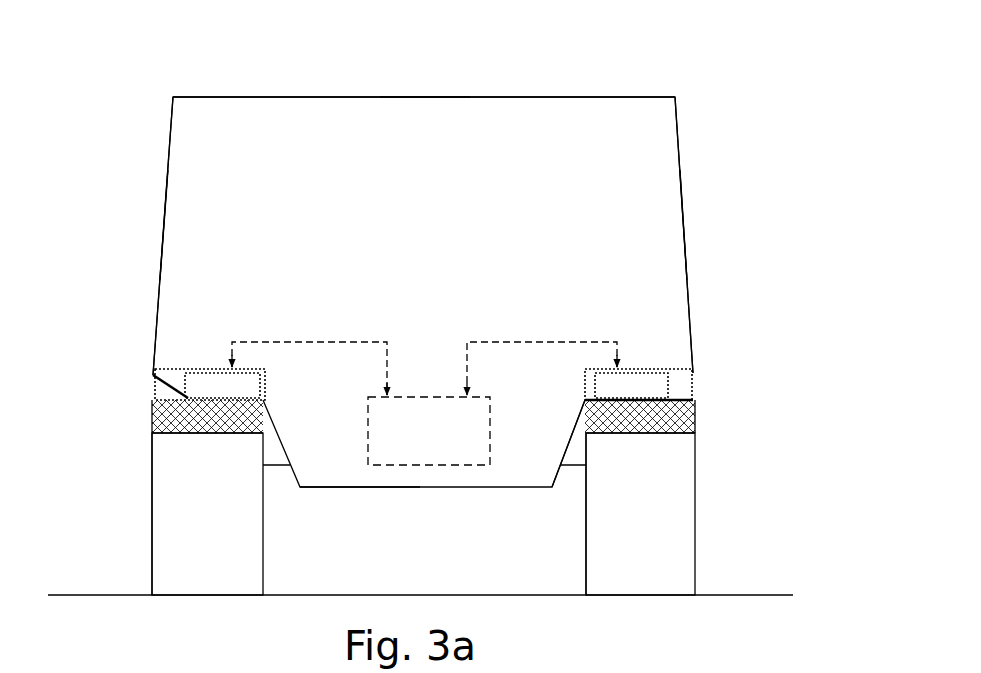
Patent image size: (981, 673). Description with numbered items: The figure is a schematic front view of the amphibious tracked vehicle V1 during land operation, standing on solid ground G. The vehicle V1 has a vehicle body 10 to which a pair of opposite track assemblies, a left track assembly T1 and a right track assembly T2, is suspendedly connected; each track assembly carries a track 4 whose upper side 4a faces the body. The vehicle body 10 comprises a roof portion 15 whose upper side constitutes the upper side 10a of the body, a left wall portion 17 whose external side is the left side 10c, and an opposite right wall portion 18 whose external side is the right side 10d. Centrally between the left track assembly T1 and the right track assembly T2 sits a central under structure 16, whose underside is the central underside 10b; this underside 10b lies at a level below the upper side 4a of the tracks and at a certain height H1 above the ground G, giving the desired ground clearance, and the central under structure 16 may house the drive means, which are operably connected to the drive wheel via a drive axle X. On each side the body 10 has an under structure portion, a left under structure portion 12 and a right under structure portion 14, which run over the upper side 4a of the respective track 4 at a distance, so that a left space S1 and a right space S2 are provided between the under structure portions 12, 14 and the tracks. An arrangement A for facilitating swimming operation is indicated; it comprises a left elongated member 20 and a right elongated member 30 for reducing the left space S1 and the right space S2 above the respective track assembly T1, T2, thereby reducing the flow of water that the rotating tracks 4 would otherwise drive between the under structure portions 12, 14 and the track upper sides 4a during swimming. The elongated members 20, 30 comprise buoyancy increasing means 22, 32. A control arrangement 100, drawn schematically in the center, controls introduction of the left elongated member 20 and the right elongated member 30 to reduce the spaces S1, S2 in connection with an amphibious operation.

The vehicle body 10 is at (222, 93).
The upper side 10a is at (377, 96).
The central underside 10b is at (410, 490).
The left side 10c is at (680, 148).
The right side 10d is at (172, 143).
The roof portion 15 is at (455, 96).
The central under structure 16 is at (358, 490).
The left wall portion 17 is at (685, 197).
The right wall portion 18 is at (164, 201).
The left elongated member 20 is at (660, 359).
The left buoyancy increasing means 22 is at (670, 385).
The right elongated member 30 is at (182, 364).
The buoyancy increasing means 32 is at (182, 383).
The left under structure portion 12 is at (650, 403).
The right under structure portion 14 is at (211, 402).
The track 4 is at (192, 597).
The upper side of track 4a is at (233, 432).
The control arrangement 100 is at (414, 440).
The arrangement A is at (207, 357).
The left space S1 is at (695, 408).
The right space S2 is at (155, 417).
The left track assembly T1 is at (584, 547).
The right track assembly T2 is at (150, 515).
The height of bottom wall above ground H1 is at (443, 490).
The drive axle X is at (553, 490).
The ground G is at (745, 595).
The tracked vehicle V1 is at (510, 52).